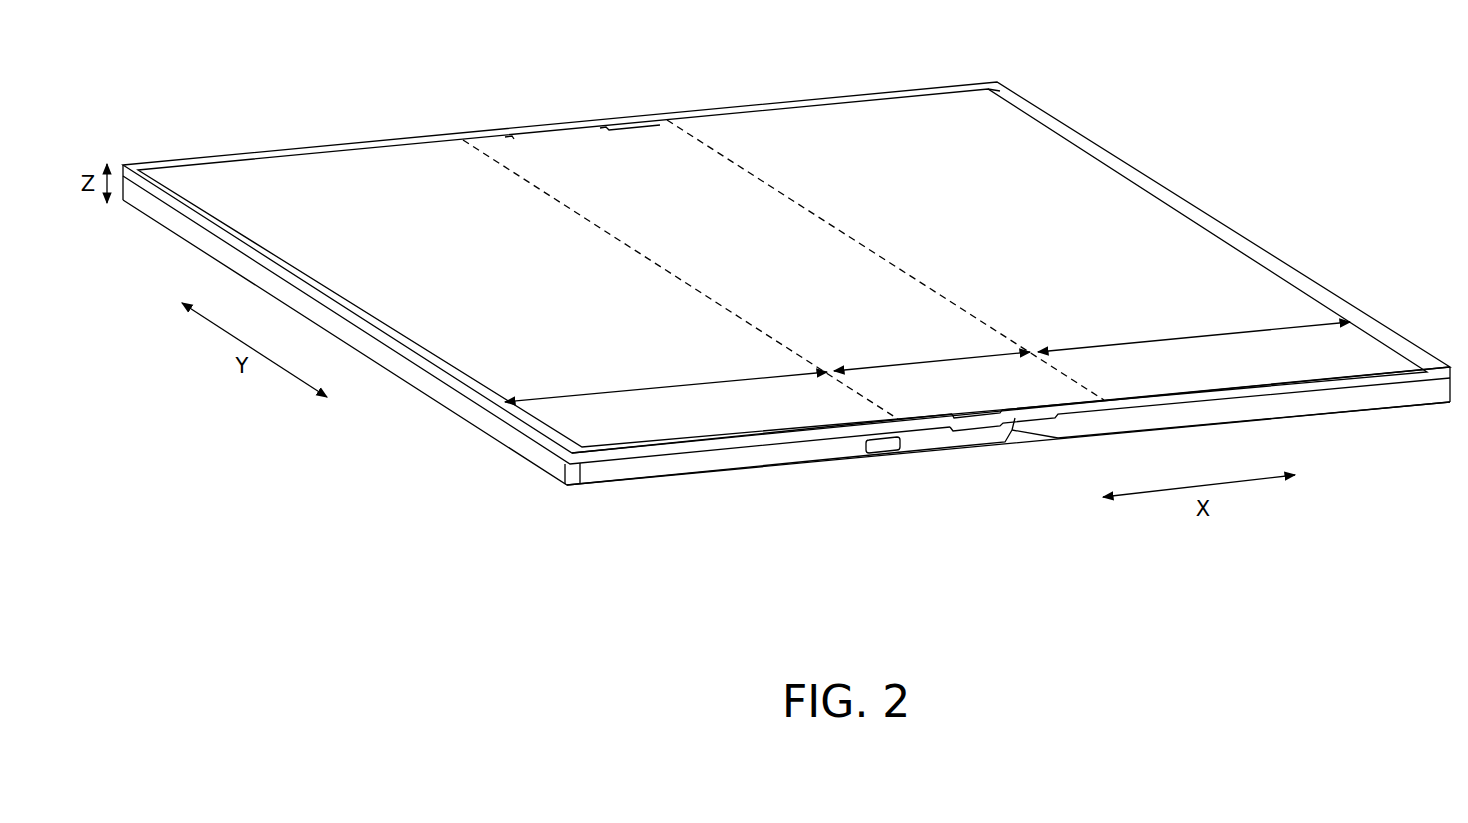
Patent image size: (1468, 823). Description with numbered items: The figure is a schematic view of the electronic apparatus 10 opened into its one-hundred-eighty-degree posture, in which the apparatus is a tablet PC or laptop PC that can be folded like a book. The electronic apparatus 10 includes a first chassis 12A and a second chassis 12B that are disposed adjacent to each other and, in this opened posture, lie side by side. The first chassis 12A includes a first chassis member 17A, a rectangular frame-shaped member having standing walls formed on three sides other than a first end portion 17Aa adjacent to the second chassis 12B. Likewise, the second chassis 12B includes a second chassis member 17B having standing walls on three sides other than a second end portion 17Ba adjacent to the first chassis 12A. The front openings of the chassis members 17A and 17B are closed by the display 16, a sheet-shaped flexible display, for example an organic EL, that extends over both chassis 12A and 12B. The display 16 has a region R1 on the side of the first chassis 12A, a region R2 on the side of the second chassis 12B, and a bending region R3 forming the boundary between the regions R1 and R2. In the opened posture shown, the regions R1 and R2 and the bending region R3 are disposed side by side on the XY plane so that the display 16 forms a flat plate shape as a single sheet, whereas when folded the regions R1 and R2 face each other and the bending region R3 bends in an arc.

The electronic apparatus 10 is at (165, 67).
The display 16 is at (1022, 154).
The first chassis 12A is at (720, 487).
The second chassis 12B is at (1343, 427).
The first chassis member 17A is at (617, 478).
The second chassis member 17B is at (1408, 398).
The first end portion 17Aa is at (1018, 433).
The second end portion 17Ba is at (1012, 432).
The region R1 is at (666, 383).
The region R2 is at (1194, 332).
The bending region R3 is at (932, 355).